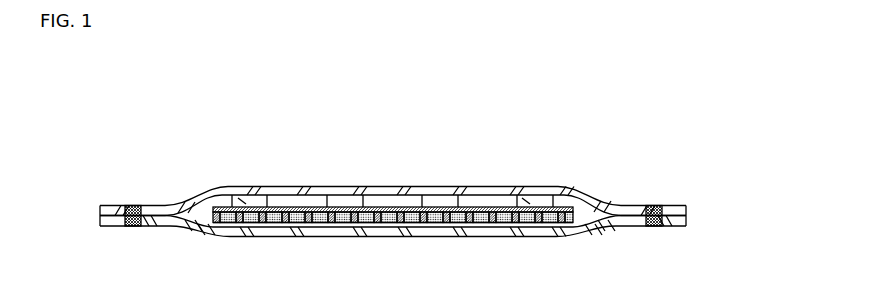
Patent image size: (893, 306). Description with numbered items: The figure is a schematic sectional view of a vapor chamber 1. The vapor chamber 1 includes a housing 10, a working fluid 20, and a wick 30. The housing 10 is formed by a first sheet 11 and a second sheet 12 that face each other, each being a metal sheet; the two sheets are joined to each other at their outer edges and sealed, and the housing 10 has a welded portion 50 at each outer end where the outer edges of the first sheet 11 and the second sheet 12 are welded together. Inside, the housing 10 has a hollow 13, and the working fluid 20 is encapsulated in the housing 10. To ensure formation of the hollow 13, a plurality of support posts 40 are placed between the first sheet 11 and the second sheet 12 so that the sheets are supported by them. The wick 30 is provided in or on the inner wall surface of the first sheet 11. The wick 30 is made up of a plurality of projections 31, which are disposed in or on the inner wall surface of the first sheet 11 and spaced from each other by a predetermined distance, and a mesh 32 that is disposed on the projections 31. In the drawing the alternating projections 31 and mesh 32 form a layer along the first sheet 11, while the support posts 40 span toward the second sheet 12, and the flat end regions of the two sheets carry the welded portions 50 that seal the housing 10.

The vapor chamber 1 is at (739, 143).
The housing 10 is at (747, 188).
The first sheet 11 is at (690, 224).
The second sheet 12 is at (690, 207).
The hollow 13 is at (224, 200).
The working fluid 20 is at (388, 228).
The wick 30 is at (452, 276).
The projections 31 is at (472, 224).
The mesh 32 is at (505, 224).
The support posts 40 is at (254, 200).
The welded portion 50 is at (133, 228).